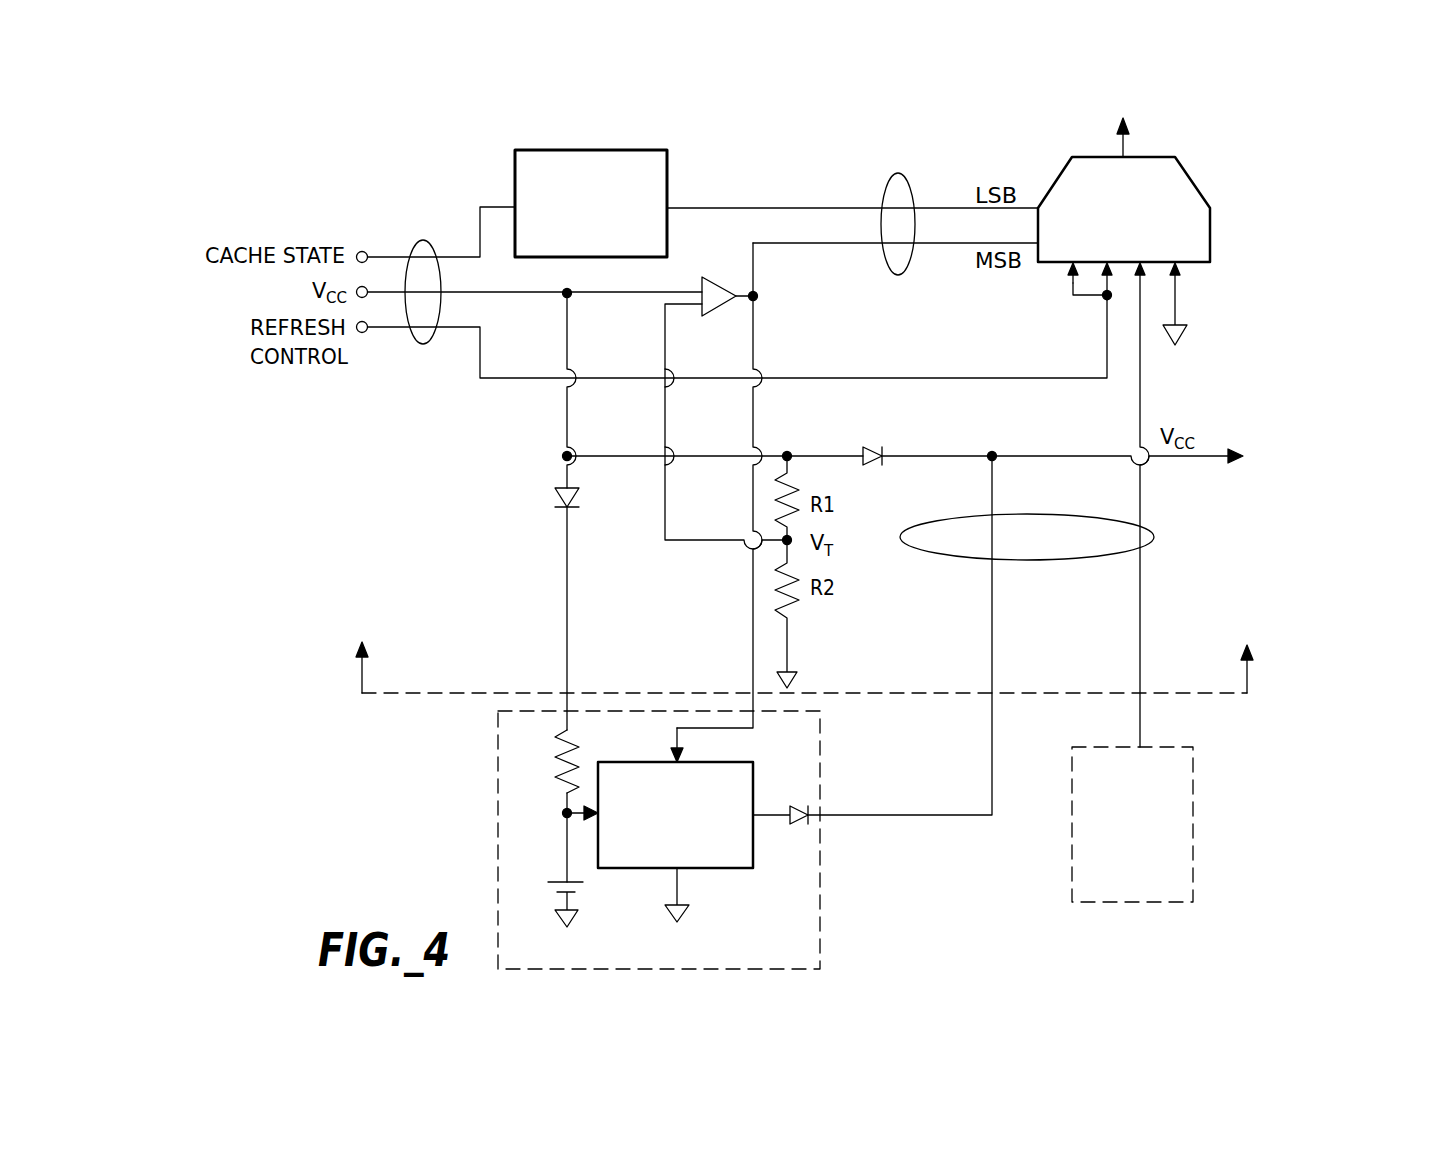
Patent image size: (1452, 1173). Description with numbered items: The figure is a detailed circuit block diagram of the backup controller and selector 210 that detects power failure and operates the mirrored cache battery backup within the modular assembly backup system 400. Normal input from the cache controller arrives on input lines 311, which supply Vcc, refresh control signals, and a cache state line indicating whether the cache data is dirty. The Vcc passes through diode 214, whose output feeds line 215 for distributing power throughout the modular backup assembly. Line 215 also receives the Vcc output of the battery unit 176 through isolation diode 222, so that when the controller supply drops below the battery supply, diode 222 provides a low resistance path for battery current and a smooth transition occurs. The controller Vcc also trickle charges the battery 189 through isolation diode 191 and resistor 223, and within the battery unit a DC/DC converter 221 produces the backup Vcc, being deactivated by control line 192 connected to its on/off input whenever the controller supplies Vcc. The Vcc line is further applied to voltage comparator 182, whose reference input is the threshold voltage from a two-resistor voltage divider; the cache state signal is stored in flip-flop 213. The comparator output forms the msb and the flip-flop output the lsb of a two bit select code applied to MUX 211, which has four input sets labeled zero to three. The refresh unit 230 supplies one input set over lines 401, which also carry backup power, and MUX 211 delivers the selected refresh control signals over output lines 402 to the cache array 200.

The battery unit 176 is at (823, 893).
The voltage comparator 182 is at (733, 290).
The battery 189 is at (570, 893).
The isolation diode 191 is at (560, 488).
The control line 192 is at (733, 728).
The cache array 200 is at (1163, 112).
The backup controller and selector 210 is at (804, 647).
The MUX 211 is at (1207, 190).
The flip-flop 213 is at (633, 148).
The diode 214 is at (870, 447).
The line 215 is at (892, 177).
The DC/DC converter 221 is at (712, 870).
The isolation diode 222 is at (795, 822).
The resistor 223 is at (570, 745).
The refresh unit 230 is at (1197, 798).
The input lines 311 is at (423, 240).
The modular assembly backup system 400 is at (1360, 515).
The lines 401 is at (1143, 523).
The output lines 402 is at (1122, 145).